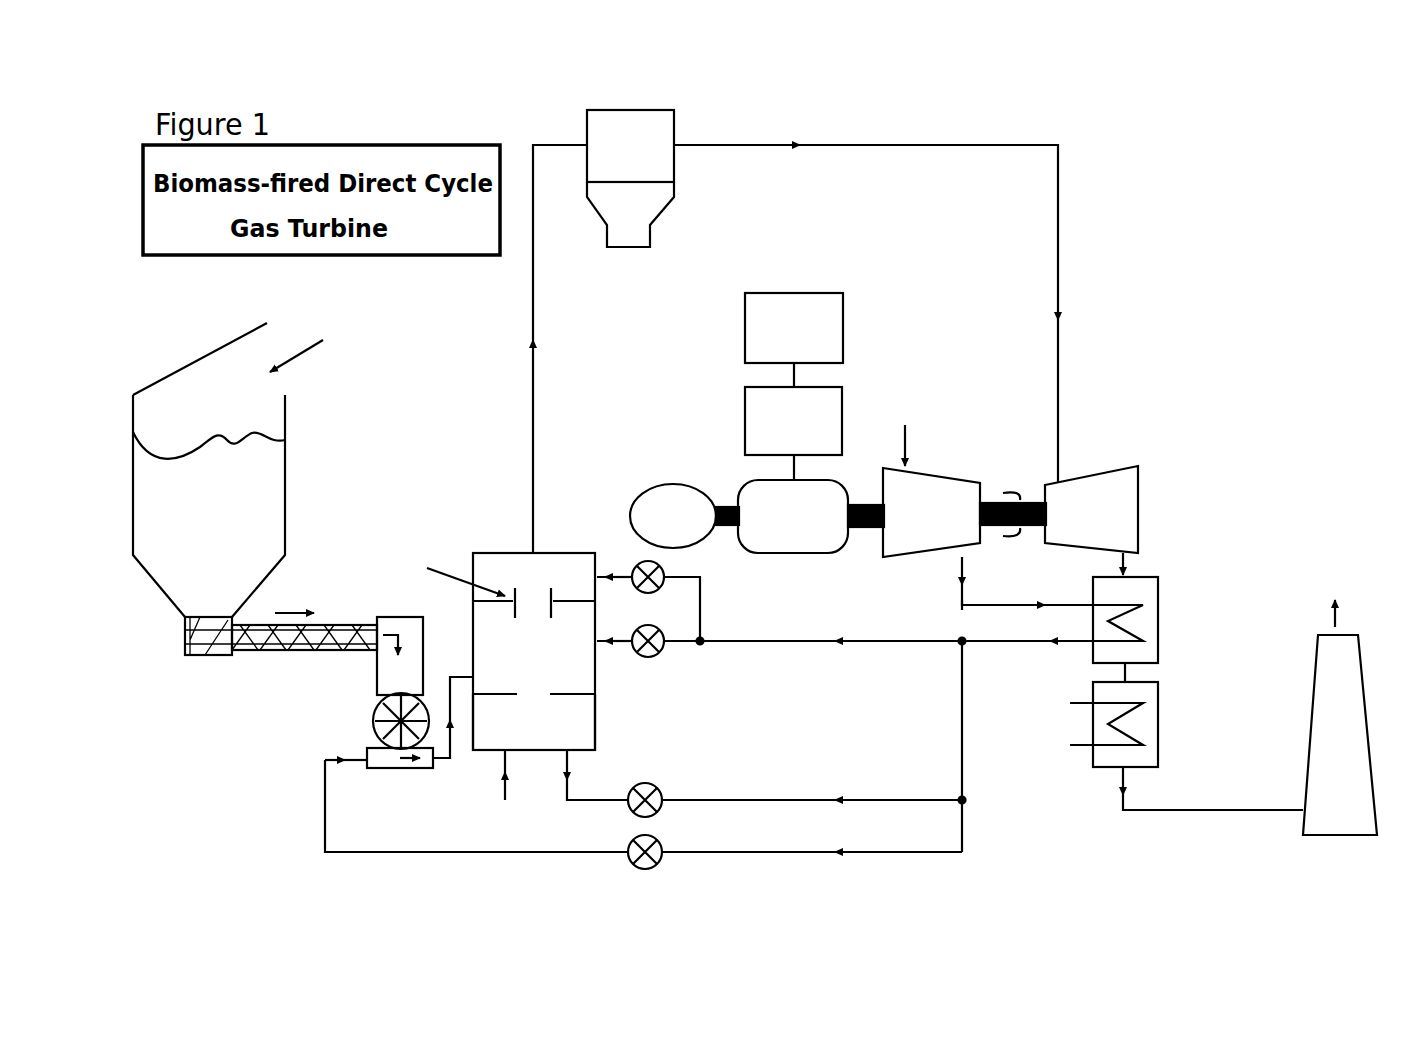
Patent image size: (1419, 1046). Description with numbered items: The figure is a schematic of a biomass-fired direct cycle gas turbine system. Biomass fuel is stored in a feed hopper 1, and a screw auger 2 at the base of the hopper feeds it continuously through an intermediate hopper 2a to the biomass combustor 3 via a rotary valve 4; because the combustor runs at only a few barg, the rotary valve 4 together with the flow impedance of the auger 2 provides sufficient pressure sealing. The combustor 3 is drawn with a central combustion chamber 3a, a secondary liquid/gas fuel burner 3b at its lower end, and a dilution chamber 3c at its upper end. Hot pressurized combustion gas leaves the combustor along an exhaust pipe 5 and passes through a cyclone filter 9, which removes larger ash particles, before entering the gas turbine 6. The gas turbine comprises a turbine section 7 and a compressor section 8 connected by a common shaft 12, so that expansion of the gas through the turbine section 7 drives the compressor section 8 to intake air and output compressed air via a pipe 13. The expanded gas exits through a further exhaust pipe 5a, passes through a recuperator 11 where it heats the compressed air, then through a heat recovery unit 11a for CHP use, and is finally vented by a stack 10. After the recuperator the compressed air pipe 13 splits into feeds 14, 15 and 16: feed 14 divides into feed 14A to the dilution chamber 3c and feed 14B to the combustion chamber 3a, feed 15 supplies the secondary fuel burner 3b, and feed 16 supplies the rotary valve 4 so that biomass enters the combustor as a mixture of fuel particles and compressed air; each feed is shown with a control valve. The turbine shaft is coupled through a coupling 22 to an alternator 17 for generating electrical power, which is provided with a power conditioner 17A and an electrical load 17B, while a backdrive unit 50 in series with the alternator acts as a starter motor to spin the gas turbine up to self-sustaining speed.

The feed hopper 1 is at (287, 476).
The screw auger 2 is at (256, 674).
The intermediate hopper 2a is at (398, 615).
The biomass combustor 3 is at (551, 625).
The central combustion chamber 3a is at (590, 677).
The secondary liquid/gas fuel burner 3b is at (490, 750).
The dilution chamber 3c is at (490, 565).
The rotary valve 4 is at (375, 729).
The exhaust pipe 5 is at (535, 395).
The further exhaust pipe 5a is at (1133, 567).
The gas turbine 6 is at (1010, 440).
The turbine section 7 is at (1121, 452).
The compressor section 8 is at (938, 468).
The cyclone filter 9 is at (672, 88).
The stack 10 is at (1370, 709).
The recuperator 11 is at (1160, 612).
The heat recovery unit 11a is at (1160, 727).
The common shaft 12 is at (989, 527).
The compressed air pipe 13 is at (962, 610).
The compressed air feed 14 is at (757, 641).
The dilution air feed 14A is at (700, 607).
The combustion air feed 14B is at (678, 650).
The compressed air feed to secondary burner 15 is at (722, 799).
The compressed air feed to rotary valve 16 is at (757, 853).
The alternator 17 is at (774, 555).
The power conditioner 17A is at (745, 421).
The electrical load 17B is at (845, 334).
The shaft coupling 22 is at (866, 530).
The backdrive unit 50 is at (660, 484).